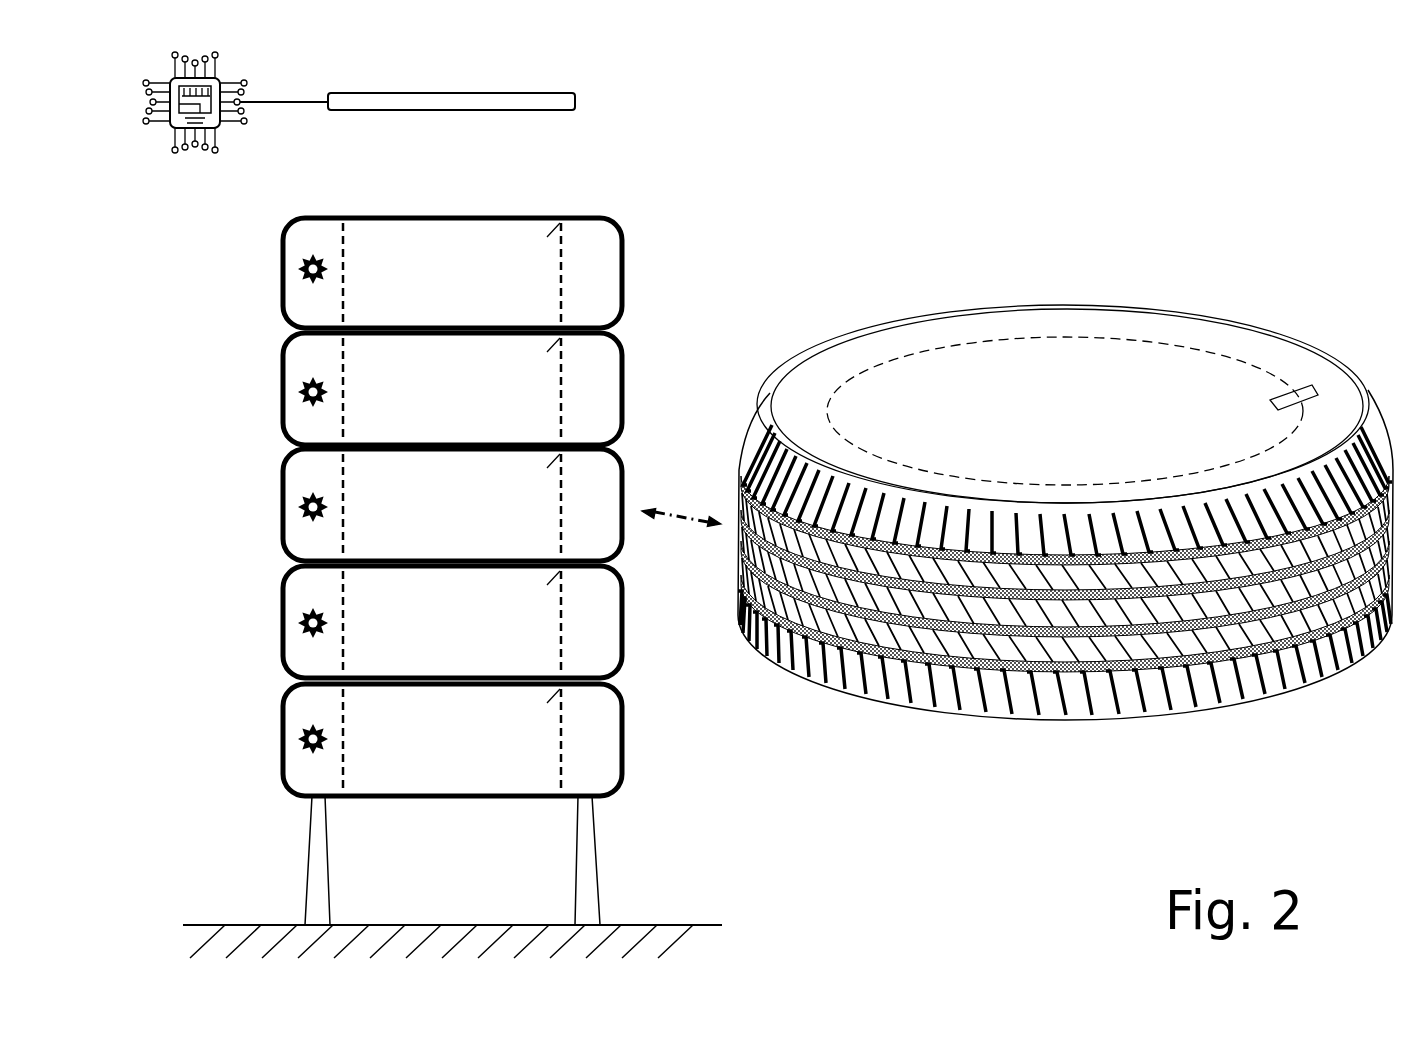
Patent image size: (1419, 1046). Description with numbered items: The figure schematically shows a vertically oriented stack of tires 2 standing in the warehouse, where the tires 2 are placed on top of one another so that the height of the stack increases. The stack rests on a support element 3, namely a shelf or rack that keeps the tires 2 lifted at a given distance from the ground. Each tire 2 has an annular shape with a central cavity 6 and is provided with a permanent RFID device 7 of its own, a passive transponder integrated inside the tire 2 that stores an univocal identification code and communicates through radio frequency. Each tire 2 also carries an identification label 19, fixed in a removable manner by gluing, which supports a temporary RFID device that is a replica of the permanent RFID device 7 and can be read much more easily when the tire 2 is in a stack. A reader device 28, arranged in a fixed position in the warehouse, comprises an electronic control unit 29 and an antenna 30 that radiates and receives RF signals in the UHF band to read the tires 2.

The tire 2 is at (598, 275).
The support element 3 is at (632, 877).
The central cavity 6 is at (352, 267).
The permanent RFID device 7 is at (313, 257).
The identification label 19 is at (556, 228).
The reader device 28 is at (438, 144).
The electronic control unit 29 is at (197, 104).
The antenna 30 is at (573, 99).